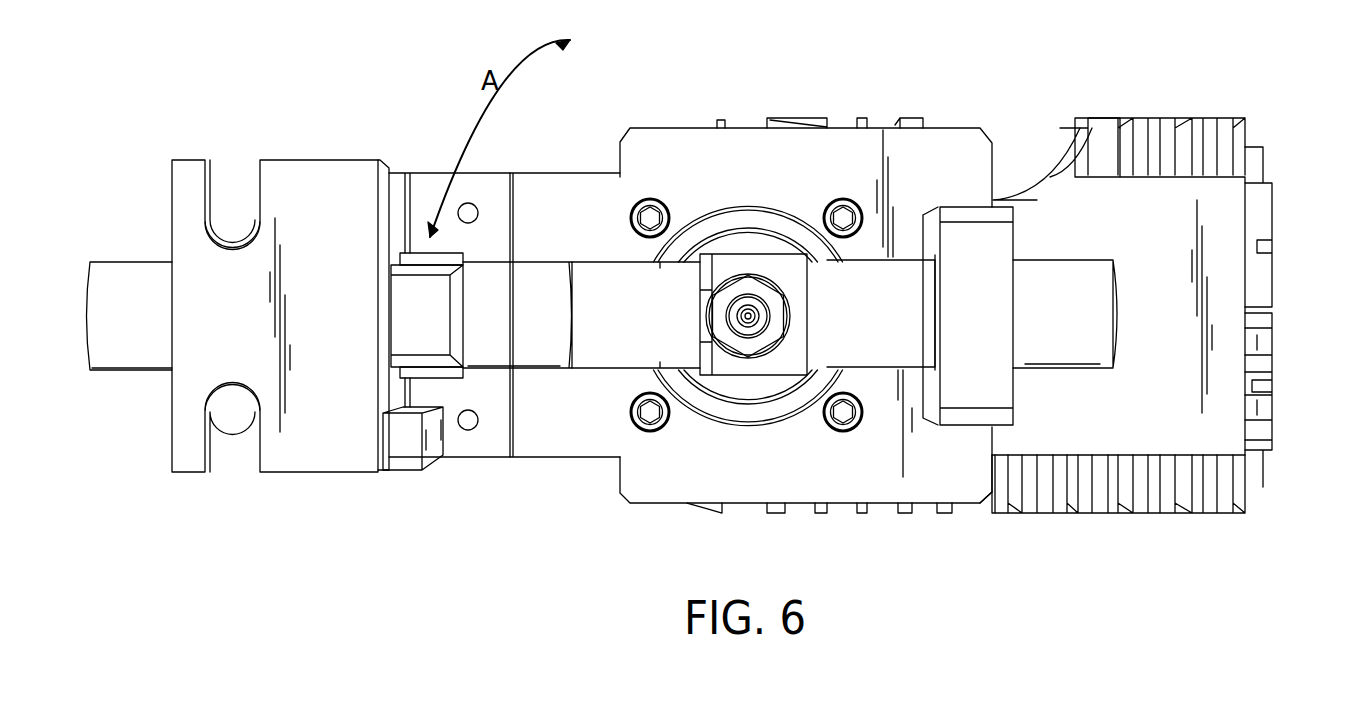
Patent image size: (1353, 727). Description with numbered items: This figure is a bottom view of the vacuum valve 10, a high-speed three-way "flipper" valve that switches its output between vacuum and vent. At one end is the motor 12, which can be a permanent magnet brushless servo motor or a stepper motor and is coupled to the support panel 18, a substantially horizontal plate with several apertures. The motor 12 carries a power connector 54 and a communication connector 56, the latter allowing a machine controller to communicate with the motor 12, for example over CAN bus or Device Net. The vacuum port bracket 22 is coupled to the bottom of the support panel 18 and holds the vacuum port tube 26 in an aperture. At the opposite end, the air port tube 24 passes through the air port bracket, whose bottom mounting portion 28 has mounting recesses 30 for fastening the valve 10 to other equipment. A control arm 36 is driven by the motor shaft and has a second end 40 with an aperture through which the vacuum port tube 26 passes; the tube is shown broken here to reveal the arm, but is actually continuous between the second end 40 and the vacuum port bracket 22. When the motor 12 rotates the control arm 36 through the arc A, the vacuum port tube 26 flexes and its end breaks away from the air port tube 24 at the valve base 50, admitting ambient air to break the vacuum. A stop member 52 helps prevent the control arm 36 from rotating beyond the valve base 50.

The vacuum valve 10 is at (1250, 72).
The motor 12 is at (1100, 127).
The support panel 18 is at (675, 150).
The vacuum port bracket 22 is at (968, 212).
The air port tube 24 is at (118, 355).
The vacuum port tube 26 is at (530, 345).
The bottom mounting portion 28 is at (280, 180).
The mounting recesses 30 is at (210, 178).
The control arm 36 is at (610, 300).
The second end 40 is at (405, 293).
The valve base 50 is at (382, 325).
The stop member 52 is at (405, 458).
The power connector 54 is at (1273, 355).
The communication connector 56 is at (1273, 208).